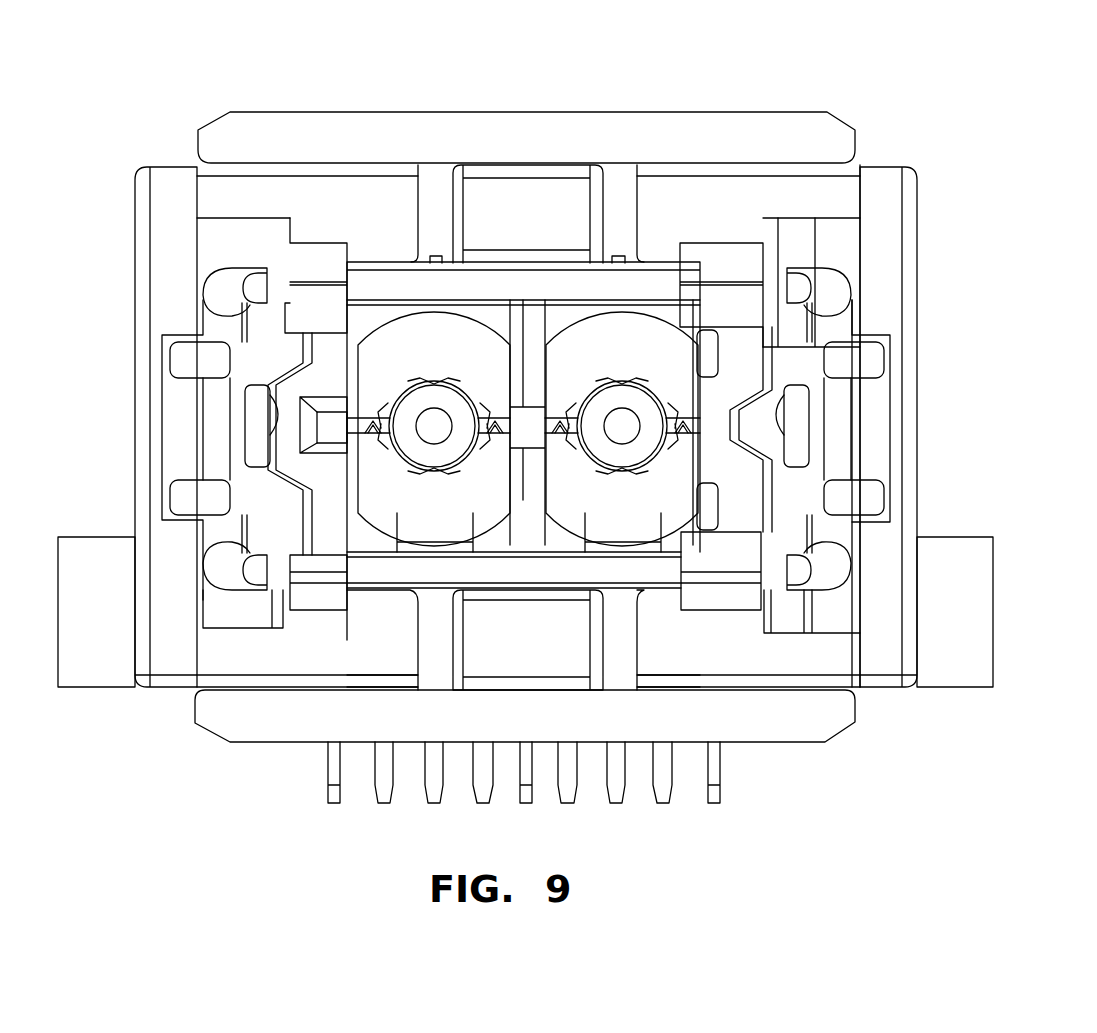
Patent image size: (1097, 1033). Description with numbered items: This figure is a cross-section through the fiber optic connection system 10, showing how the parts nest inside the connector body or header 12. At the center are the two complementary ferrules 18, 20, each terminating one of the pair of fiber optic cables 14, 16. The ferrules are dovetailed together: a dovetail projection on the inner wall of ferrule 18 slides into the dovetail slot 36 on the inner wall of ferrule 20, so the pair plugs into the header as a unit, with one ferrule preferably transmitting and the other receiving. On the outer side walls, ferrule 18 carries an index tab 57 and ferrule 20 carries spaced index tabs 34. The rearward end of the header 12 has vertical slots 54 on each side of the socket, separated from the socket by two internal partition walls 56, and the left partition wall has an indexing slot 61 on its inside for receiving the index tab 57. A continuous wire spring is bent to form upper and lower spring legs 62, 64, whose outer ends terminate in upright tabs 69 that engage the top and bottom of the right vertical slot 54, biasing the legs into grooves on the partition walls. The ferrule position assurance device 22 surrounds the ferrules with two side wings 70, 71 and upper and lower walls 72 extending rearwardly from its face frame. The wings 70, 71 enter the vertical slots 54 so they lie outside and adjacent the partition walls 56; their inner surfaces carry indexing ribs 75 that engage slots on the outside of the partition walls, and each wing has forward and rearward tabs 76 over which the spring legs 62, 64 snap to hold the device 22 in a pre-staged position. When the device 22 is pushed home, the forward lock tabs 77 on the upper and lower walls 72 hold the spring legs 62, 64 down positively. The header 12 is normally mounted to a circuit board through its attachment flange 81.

The fiber optic connection system 10 is at (934, 279).
The connector body or header 12 is at (918, 387).
The fiber optic cable 14 is at (435, 435).
The fiber optic cable 16 is at (623, 435).
The ferrule 18 is at (442, 350).
The ferrule 20 is at (634, 350).
The ferrule position assurance (FPA) device 22 is at (789, 114).
The index tabs 34 is at (708, 347).
The dovetail slot 36 is at (513, 375).
The vertical slots 54 is at (228, 233).
The internal partition walls 56 is at (318, 235).
The index tab 57 is at (333, 428).
The indexing slot 61 is at (272, 425).
The upper spring leg 62 is at (395, 282).
The lower spring leg 64 is at (577, 570).
The upright tabs 69 is at (825, 250).
The side wing 70 is at (247, 463).
The side wing 71 is at (783, 367).
The upper and lower walls 72 is at (538, 143).
The indexing ribs 75 is at (287, 355).
The forward and rearward tabs 76 is at (792, 242).
The forward lock tab 77 is at (455, 268).
The attachment flange 81 is at (980, 650).